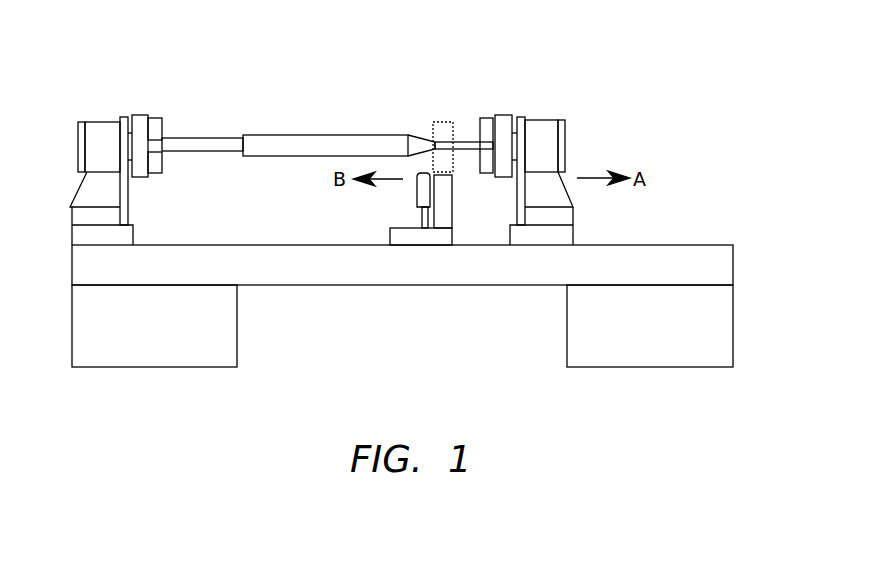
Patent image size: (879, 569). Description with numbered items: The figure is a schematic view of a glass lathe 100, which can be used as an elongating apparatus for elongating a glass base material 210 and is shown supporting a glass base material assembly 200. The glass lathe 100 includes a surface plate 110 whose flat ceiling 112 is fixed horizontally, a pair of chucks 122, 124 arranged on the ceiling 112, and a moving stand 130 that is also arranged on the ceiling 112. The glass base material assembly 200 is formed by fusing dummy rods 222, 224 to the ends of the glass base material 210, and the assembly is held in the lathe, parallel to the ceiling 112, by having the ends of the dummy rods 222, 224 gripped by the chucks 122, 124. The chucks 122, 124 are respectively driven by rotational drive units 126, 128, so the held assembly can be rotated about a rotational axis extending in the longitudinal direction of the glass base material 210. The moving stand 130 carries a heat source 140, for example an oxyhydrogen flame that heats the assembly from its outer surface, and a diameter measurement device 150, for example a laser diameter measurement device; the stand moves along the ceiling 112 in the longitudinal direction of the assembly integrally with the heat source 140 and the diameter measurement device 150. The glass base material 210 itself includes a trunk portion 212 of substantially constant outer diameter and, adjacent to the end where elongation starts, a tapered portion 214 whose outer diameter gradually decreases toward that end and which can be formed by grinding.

The glass lathe 100 is at (684, 85).
The surface plate 110 is at (670, 199).
The ceiling 112 is at (712, 245).
The chuck 122 is at (487, 117).
The chuck 124 is at (155, 116).
The rotational drive unit 126 is at (542, 119).
The rotational drive unit 128 is at (101, 120).
The moving stand 130 is at (390, 238).
The heat source 140 is at (417, 190).
The diameter measurement device 150 is at (457, 160).
The glass base material assembly 200 is at (478, 35).
The glass base material 210 is at (396, 72).
The trunk portion 212 is at (334, 134).
The tapered portion 214 is at (421, 135).
The dummy rod 222 is at (469, 140).
The dummy rod 224 is at (204, 137).